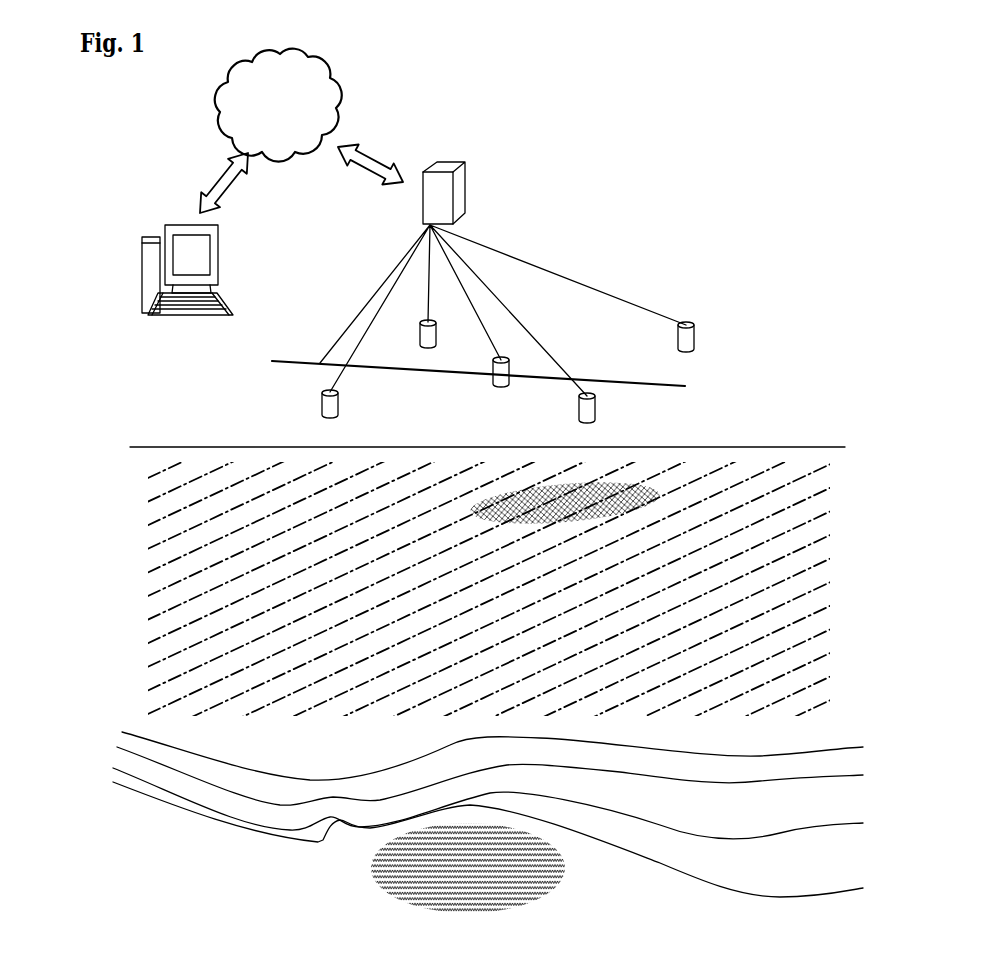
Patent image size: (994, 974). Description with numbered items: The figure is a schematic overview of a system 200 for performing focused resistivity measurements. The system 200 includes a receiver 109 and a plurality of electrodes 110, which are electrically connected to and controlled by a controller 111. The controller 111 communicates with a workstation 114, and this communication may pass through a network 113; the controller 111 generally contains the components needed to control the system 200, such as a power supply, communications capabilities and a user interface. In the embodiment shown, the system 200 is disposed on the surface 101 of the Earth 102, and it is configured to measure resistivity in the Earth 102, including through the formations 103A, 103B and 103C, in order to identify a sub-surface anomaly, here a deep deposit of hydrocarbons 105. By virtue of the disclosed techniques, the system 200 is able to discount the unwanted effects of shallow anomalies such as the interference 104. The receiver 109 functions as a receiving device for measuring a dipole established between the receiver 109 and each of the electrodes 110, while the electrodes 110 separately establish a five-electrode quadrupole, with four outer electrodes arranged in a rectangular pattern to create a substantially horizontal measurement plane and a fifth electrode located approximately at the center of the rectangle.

The system 200 is at (808, 418).
The network 113 is at (337, 89).
The workstation 114 is at (142, 247).
The controller 111 is at (460, 193).
The receiver 109 is at (307, 364).
The electrodes 110 is at (493, 379).
The surface 101 is at (210, 447).
The Earth 102 is at (489, 566).
The interference 104 is at (645, 508).
The formation 103A is at (499, 756).
The formation 103B is at (496, 782).
The formation 103C is at (494, 832).
The hydrocarbons 105 is at (448, 912).